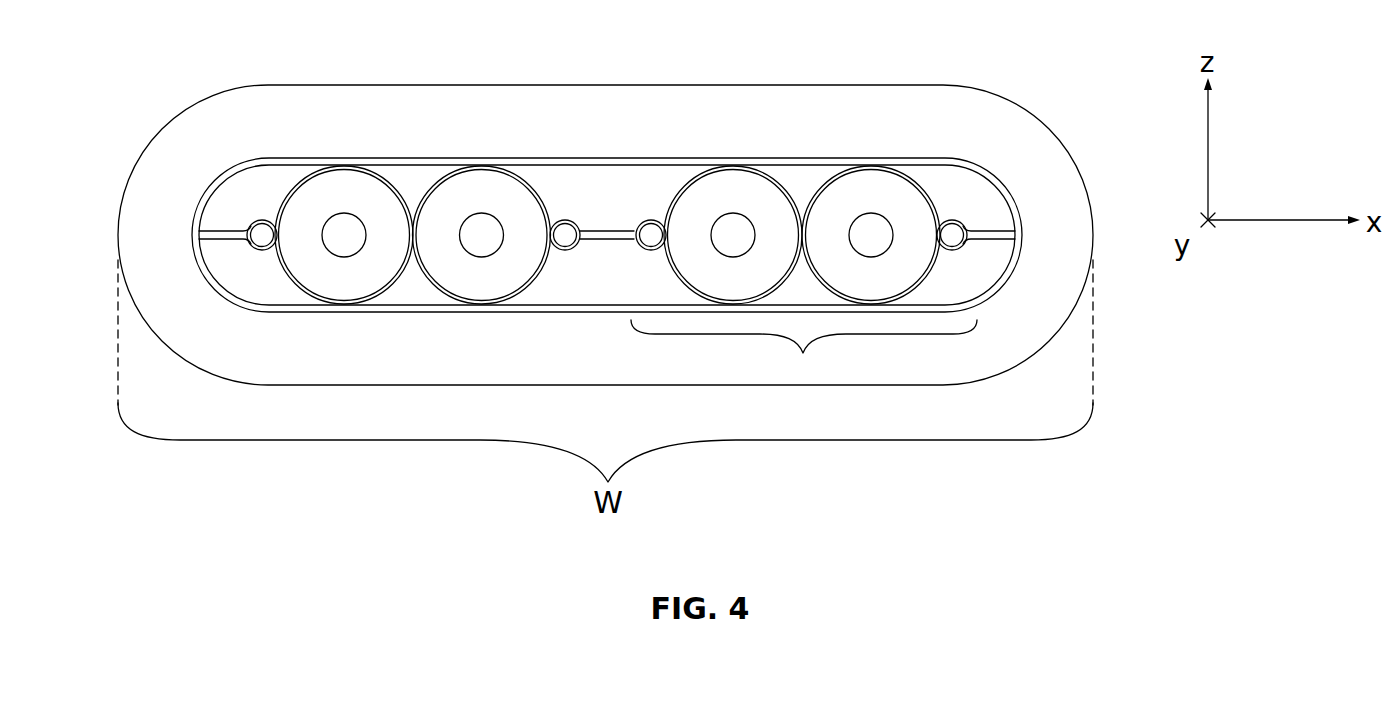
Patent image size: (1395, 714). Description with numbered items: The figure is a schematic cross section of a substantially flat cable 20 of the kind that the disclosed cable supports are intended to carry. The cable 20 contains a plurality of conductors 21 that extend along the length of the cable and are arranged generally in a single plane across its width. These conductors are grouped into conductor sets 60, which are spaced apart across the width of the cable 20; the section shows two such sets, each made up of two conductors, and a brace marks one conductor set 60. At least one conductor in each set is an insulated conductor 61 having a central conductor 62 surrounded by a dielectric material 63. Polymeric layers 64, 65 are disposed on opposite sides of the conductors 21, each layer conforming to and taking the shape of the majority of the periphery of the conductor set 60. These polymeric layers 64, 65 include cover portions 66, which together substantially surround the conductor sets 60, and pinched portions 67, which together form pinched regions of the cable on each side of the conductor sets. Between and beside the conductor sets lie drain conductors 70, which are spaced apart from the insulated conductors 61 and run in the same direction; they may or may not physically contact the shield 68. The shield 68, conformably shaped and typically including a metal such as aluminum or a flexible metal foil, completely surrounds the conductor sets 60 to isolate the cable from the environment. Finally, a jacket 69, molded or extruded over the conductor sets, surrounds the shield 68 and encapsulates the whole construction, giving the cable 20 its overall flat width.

The substantially flat cable 20 is at (140, 54).
The conductor 21 is at (818, 176).
The conductor set 60 is at (804, 354).
The insulated conductor 61 is at (435, 182).
The central conductor 62 is at (483, 227).
The dielectric material 63 is at (452, 283).
The polymeric layer 64 is at (284, 195).
The polymeric layer 65 is at (300, 296).
The cover portion 66 is at (770, 165).
The pinched portion 67 is at (200, 237).
The shield 68 is at (228, 168).
The jacket 69 is at (200, 352).
The drain conductor 70 is at (258, 232).